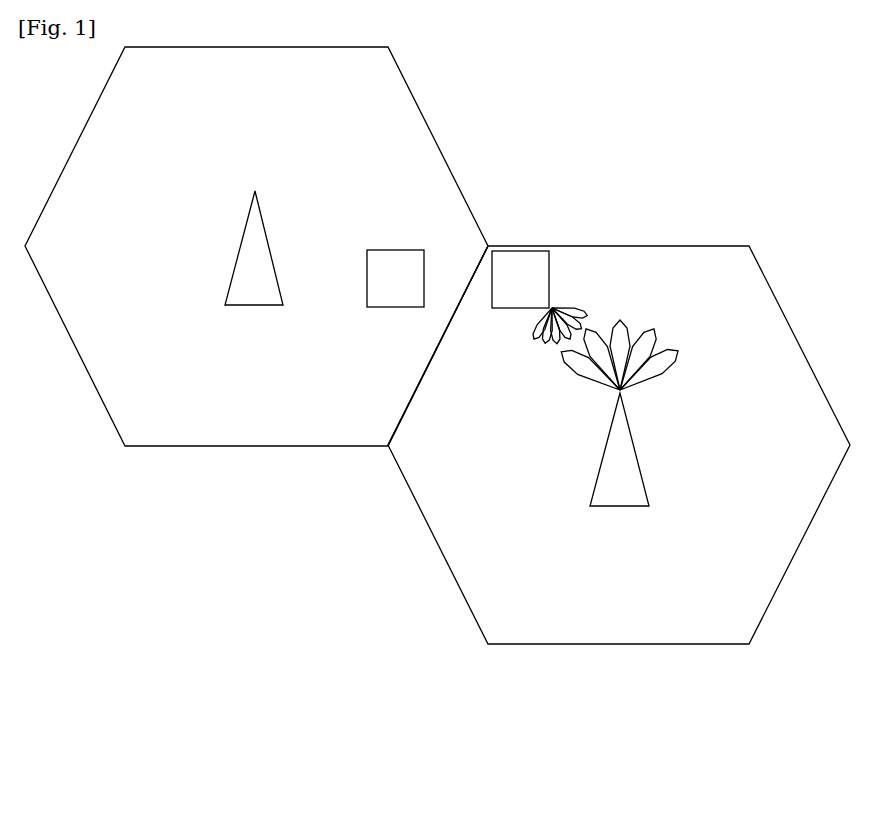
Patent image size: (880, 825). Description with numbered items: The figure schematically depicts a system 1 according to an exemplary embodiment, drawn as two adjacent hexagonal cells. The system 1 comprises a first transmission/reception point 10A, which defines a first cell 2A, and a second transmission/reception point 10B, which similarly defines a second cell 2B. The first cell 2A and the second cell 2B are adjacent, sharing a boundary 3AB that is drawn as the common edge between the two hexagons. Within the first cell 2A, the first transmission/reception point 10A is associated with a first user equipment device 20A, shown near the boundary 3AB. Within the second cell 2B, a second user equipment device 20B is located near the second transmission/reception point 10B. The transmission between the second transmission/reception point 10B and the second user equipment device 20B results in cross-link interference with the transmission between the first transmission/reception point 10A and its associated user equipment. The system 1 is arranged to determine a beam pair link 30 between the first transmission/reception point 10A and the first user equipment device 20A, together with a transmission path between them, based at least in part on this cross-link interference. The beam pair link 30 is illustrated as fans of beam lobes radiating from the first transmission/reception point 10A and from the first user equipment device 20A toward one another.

The system 1 is at (437, 427).
The first cell 2A is at (619, 436).
The second cell 2B is at (256, 275).
The boundary 3AB is at (408, 409).
The first transmission/reception point 10A is at (620, 506).
The second transmission/reception point 10B is at (255, 305).
The first user equipment device 20A is at (512, 251).
The second user equipment device 20B is at (387, 250).
The beam pair link 30 is at (600, 327).